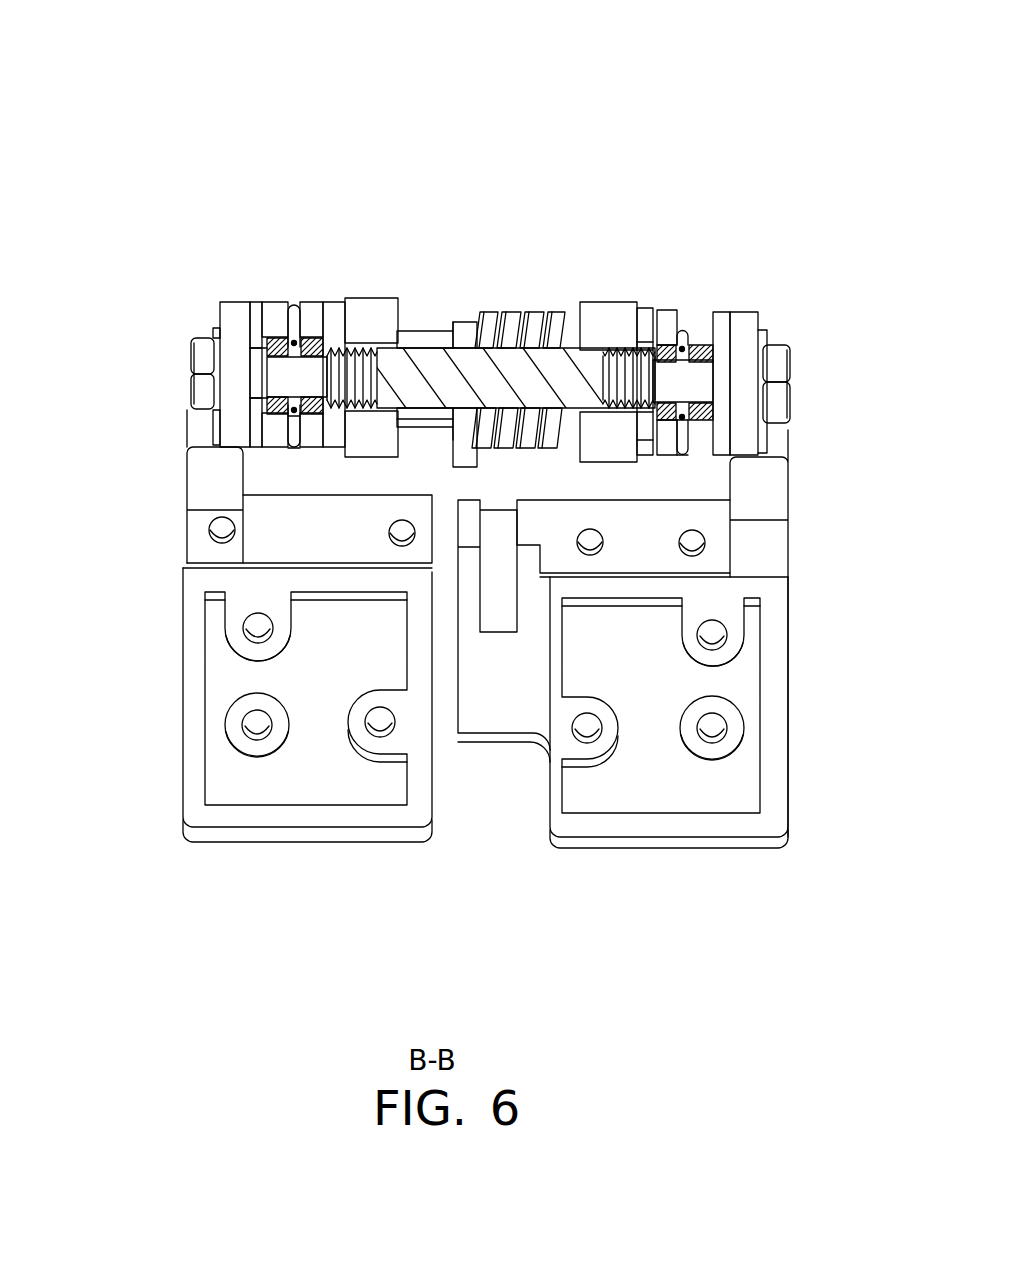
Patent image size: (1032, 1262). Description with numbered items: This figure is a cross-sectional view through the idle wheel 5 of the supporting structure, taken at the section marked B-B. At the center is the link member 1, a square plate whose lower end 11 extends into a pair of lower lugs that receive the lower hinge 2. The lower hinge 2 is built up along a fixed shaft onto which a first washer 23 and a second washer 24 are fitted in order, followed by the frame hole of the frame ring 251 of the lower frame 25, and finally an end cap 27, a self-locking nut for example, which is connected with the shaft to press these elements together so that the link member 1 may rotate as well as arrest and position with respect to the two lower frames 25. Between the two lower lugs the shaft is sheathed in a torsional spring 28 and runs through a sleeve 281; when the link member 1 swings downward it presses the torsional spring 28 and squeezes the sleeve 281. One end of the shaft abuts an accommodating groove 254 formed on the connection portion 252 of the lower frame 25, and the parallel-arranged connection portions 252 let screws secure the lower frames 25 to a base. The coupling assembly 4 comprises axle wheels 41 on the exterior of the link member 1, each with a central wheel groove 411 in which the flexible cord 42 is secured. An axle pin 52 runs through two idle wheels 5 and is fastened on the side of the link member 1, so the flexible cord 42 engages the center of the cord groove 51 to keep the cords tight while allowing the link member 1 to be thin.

The link member 1 is at (437, 348).
The lower end 11 is at (426, 281).
The lower hinge 2 is at (154, 565).
The first washer 23 is at (333, 303).
The second washer 24 is at (253, 307).
The lower frame 25 is at (183, 700).
The frame ring 251 is at (237, 303).
The connection portion 252 is at (308, 770).
The accommodating groove 254 is at (498, 600).
The end cap 27 is at (200, 392).
The torsional spring 28 is at (505, 315).
The sleeve 281 is at (428, 427).
The coupling assembly 4 is at (291, 119).
The axle wheel 41 is at (225, 322).
The flexible cord 42 is at (290, 430).
The central wheel groove 411 is at (292, 304).
The idle wheel 5 is at (277, 303).
The cord groove 51 is at (307, 303).
The axle pin 52 is at (280, 373).